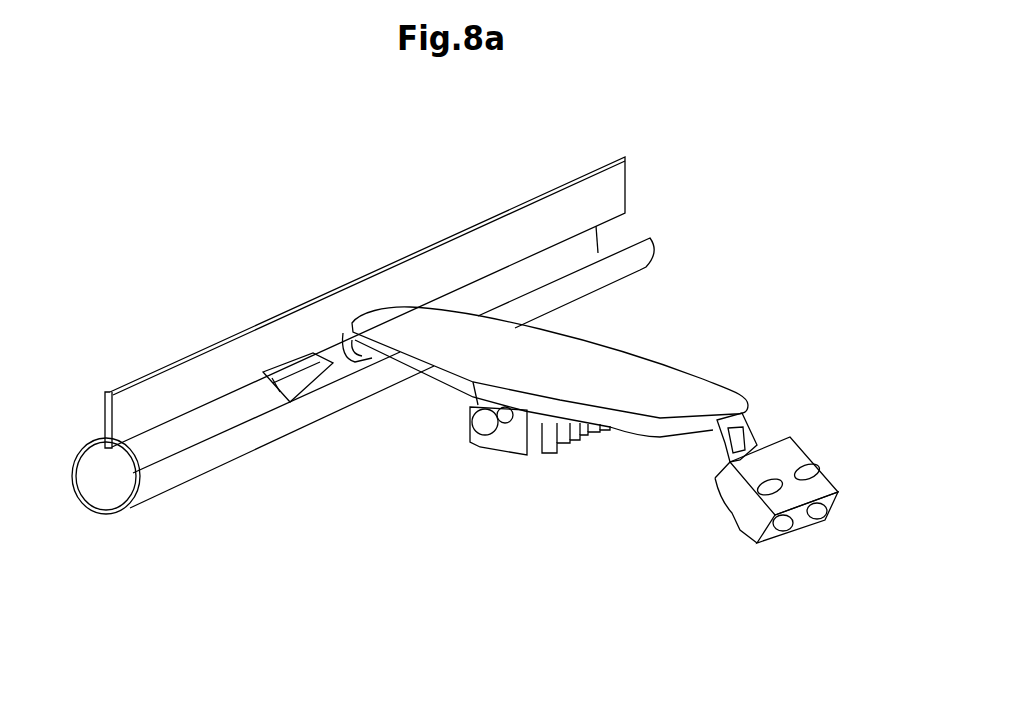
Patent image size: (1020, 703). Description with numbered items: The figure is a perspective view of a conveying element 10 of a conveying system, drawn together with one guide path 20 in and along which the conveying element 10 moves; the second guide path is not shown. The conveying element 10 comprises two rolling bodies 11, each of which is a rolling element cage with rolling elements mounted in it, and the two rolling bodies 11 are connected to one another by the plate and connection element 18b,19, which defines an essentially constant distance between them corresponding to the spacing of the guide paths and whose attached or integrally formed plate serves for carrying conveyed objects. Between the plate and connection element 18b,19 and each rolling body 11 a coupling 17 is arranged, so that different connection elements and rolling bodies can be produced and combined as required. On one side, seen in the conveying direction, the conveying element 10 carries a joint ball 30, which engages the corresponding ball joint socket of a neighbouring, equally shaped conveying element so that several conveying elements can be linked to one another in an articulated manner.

The conveying element 10 is at (733, 324).
The rolling body 11 is at (303, 383).
The coupling 17 is at (362, 369).
The plate and connection element 18b,19 is at (553, 348).
The guide path 20 is at (601, 247).
The joint ball 30 is at (487, 425).